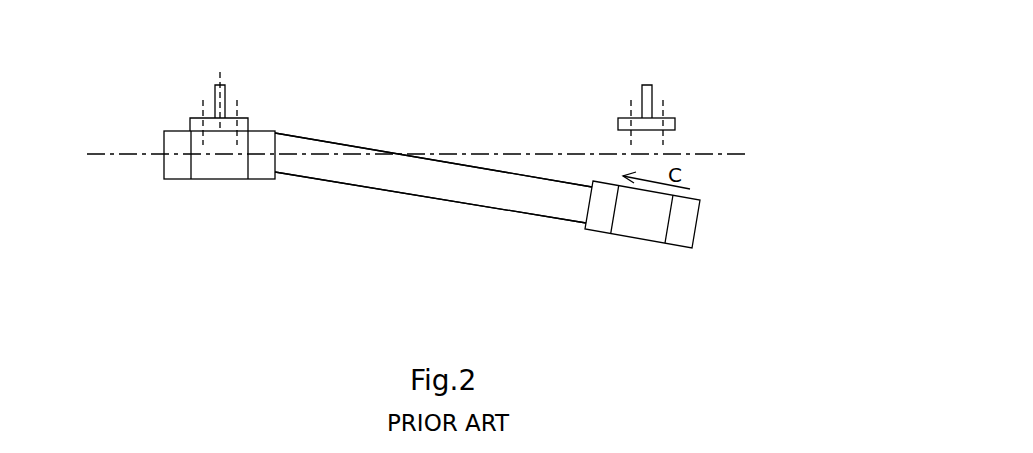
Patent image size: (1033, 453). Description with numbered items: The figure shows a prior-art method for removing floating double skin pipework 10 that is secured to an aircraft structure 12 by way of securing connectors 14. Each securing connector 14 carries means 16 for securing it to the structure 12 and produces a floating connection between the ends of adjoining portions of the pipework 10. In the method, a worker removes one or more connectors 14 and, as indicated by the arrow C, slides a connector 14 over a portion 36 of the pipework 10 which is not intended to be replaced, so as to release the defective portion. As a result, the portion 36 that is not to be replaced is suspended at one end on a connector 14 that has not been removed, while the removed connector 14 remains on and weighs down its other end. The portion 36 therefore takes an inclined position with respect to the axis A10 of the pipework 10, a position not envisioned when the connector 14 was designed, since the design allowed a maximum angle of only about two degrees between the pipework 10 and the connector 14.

The floating double skin pipework 10 is at (497, 218).
The structure 12 is at (242, 88).
The securing connector 14 is at (219, 188).
The means for securing 16 is at (238, 112).
The portion of the pipework 36 is at (413, 185).
The axis of the pipework A10 is at (723, 154).